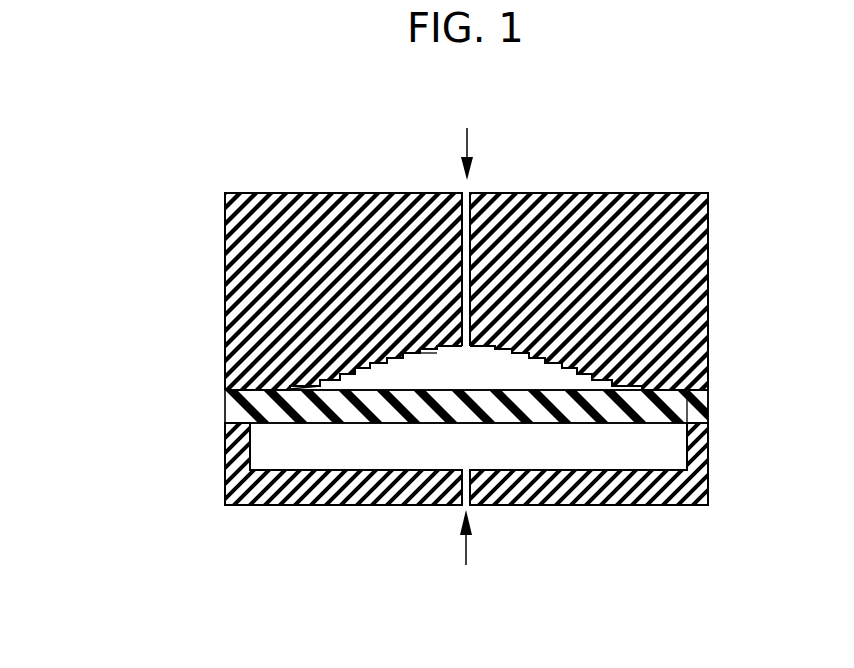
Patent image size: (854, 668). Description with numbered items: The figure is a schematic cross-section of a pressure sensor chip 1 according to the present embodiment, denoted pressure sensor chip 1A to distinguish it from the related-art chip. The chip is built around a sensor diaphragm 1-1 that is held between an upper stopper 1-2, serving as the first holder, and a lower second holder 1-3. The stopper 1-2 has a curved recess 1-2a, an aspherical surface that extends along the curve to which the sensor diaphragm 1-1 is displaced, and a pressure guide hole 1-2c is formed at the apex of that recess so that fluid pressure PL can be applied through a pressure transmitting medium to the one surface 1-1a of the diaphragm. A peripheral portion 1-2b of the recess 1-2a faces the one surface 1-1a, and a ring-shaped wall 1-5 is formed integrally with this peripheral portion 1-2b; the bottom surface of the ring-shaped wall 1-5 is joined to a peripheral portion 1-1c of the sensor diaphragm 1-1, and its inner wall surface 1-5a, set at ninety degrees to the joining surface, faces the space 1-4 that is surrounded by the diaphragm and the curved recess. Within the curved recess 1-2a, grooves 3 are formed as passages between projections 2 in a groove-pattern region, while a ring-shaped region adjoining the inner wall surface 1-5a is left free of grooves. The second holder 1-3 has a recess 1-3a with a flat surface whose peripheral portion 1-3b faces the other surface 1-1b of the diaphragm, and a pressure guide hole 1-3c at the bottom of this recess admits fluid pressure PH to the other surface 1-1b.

The pressure sensor chip 1 is at (105, 272).
The pressure sensor chip according to the present embodiment 1A is at (427, 362).
The sensor diaphragm 1-1 is at (228, 403).
The one surface of the sensor diaphragm 1-1a is at (583, 388).
The other surface of the sensor diaphragm 1-1b is at (510, 428).
The peripheral portion of the sensor diaphragm 1-1c is at (686, 393).
The first holder (stopper) 1-2 is at (234, 285).
The recess 1-2a is at (510, 350).
The peripheral portion of the recess 1-2b is at (707, 345).
The pressure guide hole 1-2c is at (463, 317).
The second holder 1-3 is at (234, 478).
The recess 1-3a is at (560, 462).
The peripheral portion of the recess 1-3b is at (708, 505).
The pressure guide hole 1-3c is at (450, 488).
The space 1-4 is at (420, 373).
The ring-shaped wall 1-5 is at (708, 380).
The inner wall surface 1-5a is at (645, 397).
The projections 2 is at (437, 353).
The grooves 3 is at (485, 347).